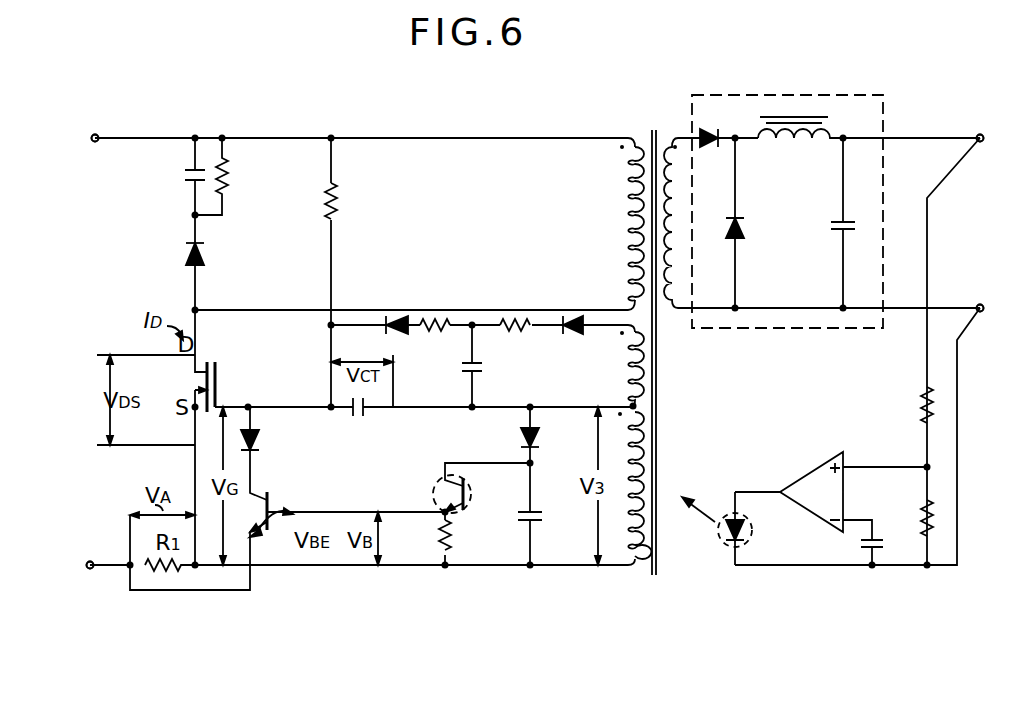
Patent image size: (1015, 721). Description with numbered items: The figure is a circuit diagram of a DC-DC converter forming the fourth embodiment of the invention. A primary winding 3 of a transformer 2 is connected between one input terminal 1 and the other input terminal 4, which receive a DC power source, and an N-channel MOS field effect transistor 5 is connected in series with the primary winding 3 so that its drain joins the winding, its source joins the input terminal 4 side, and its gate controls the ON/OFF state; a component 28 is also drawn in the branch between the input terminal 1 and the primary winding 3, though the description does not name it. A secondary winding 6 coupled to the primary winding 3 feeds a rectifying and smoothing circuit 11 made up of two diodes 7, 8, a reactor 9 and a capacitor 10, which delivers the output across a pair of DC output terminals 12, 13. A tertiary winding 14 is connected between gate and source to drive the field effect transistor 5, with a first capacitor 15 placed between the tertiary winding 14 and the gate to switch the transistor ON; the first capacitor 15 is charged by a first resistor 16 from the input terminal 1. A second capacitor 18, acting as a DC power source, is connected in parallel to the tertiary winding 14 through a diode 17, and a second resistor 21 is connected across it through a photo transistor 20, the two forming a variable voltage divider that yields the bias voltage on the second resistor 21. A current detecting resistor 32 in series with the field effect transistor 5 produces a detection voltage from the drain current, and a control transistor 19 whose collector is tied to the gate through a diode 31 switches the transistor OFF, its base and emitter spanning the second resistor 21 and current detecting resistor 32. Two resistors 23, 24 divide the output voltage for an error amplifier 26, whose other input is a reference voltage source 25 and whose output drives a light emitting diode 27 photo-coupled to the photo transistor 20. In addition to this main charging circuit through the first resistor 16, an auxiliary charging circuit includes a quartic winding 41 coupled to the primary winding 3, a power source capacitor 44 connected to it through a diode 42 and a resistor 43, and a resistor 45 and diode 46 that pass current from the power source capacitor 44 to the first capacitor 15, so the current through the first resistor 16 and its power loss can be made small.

The input terminal 1 is at (95, 134).
The transformer 2 is at (652, 134).
The primary winding 3 is at (625, 148).
The input terminal 4 is at (90, 560).
The field effect transistor 5 is at (191, 373).
The secondary winding 6 is at (668, 312).
The diode 7 is at (721, 130).
The diode 8 is at (740, 240).
The reactor 9 is at (806, 142).
The capacitor 10 is at (842, 232).
The rectifying and smoothing circuit 11 is at (883, 130).
The DC output terminal 12 is at (978, 134).
The DC output terminal 13 is at (978, 304).
The tertiary winding 14 is at (637, 568).
The first capacitor 15 is at (362, 422).
The first resistor 16 is at (333, 184).
The diode 17 is at (519, 438).
The second capacitor 18 is at (537, 523).
The control transistor 19 is at (270, 502).
The photo transistor 20 is at (468, 492).
The second resistor 21 is at (454, 540).
The resistor 23 is at (922, 404).
The resistor 24 is at (924, 532).
The reference voltage source 25 is at (860, 542).
The error amplifier 26 is at (184, 259).
The light emitting diode 27 is at (228, 175).
The capacitor 28 is at (186, 170).
The diode 31 is at (263, 446).
The current detecting resistor 32 is at (190, 575).
The quartic winding 41 is at (622, 378).
The diode 42 is at (581, 337).
The resistor 43 is at (520, 339).
The power source capacitor 44 is at (463, 374).
The resistor 45 is at (437, 339).
The diode 46 is at (386, 335).